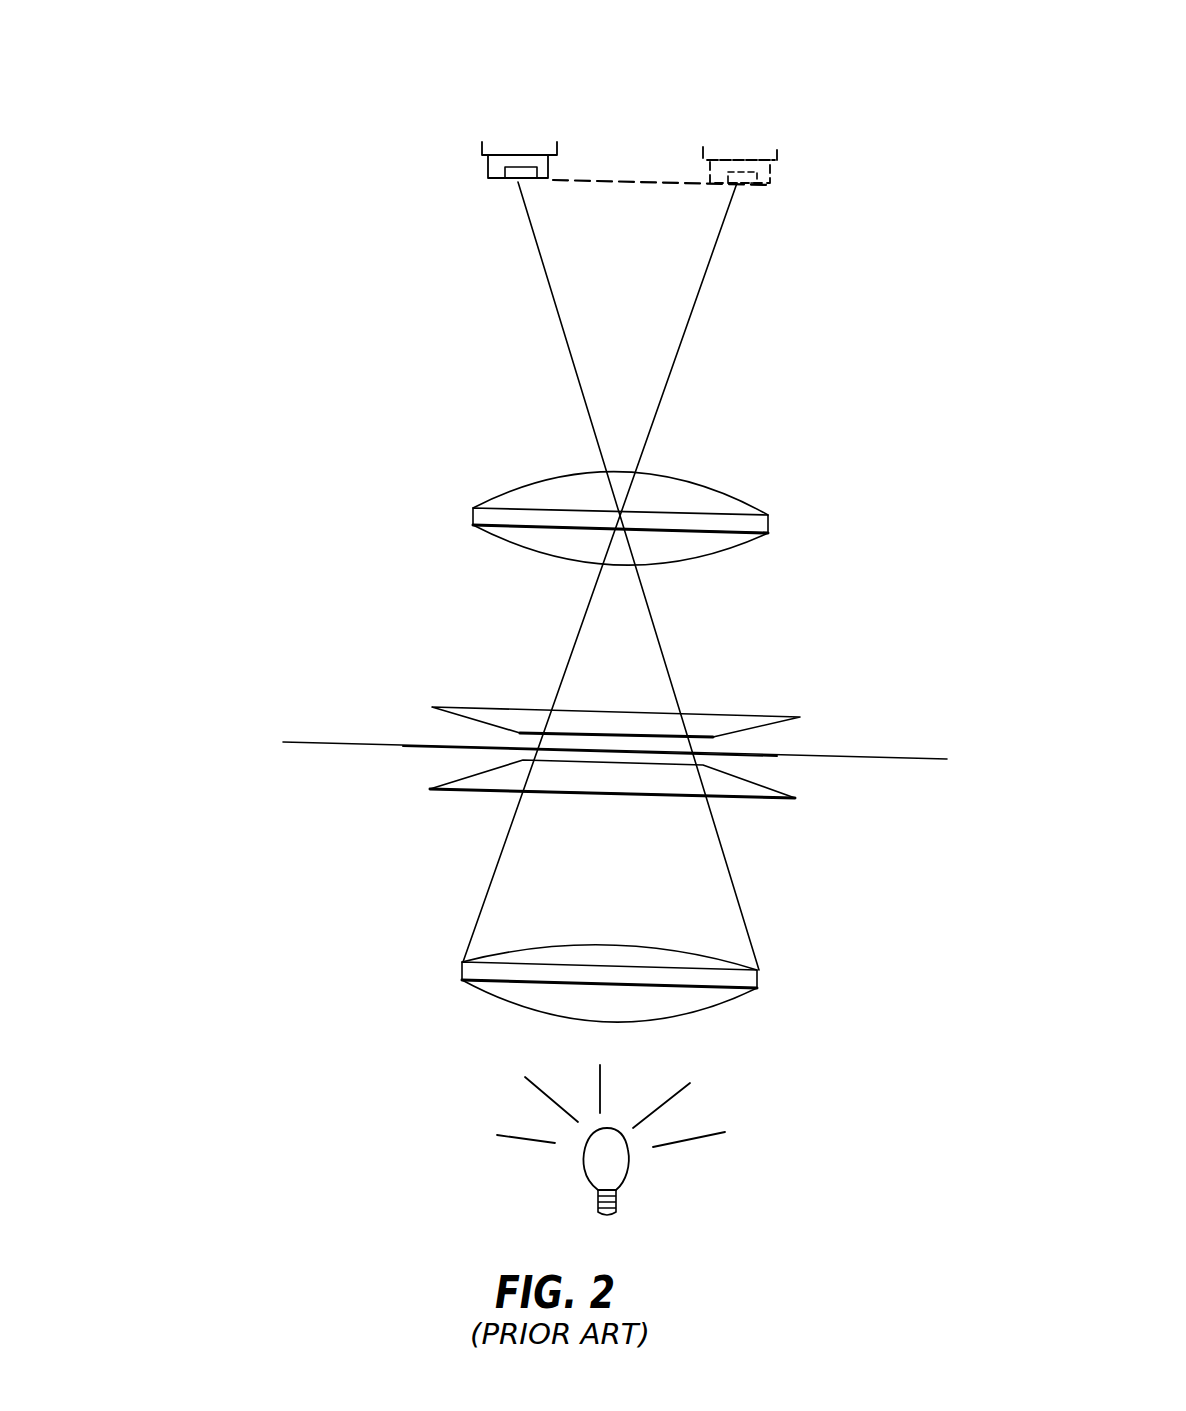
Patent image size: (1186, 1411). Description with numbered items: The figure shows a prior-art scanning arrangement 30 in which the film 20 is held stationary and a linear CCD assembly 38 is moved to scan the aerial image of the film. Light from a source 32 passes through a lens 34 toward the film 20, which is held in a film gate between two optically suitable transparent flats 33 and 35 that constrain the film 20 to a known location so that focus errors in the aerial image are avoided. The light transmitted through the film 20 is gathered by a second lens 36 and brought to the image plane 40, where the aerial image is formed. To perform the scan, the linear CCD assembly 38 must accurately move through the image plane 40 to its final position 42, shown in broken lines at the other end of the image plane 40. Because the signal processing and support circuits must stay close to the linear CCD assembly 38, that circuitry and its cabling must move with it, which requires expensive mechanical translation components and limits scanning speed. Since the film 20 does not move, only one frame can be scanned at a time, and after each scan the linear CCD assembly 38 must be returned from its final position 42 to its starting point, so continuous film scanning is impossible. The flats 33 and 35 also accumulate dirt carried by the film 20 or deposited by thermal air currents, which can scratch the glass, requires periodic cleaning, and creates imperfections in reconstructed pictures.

The prior art optical imaging system 30 is at (402, 45).
The film 20 is at (397, 748).
The light source 32 is at (592, 1183).
The flat 33 is at (745, 800).
The condenser lens 34 is at (500, 1005).
The flat 35 is at (742, 717).
The imaging lens 36 is at (548, 478).
The linear CCD assembly 38 is at (518, 152).
The image plane 40 is at (687, 182).
The final position 42 is at (722, 152).